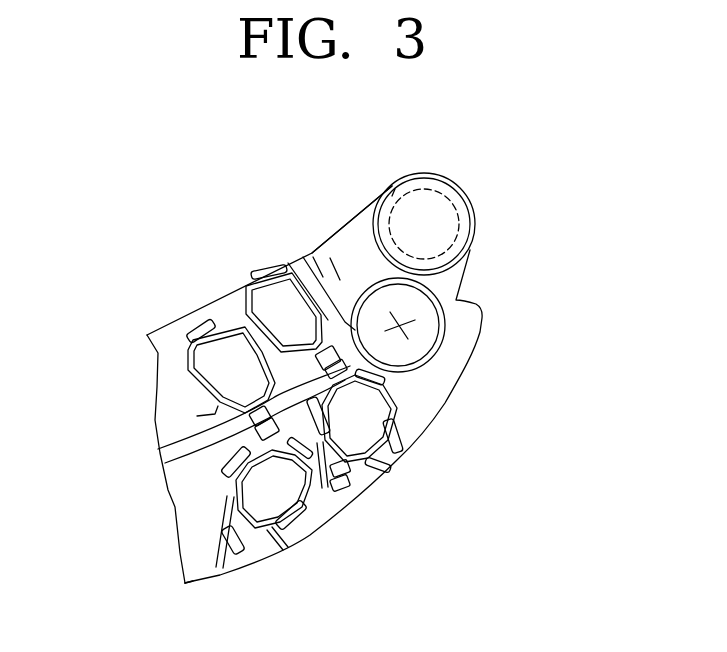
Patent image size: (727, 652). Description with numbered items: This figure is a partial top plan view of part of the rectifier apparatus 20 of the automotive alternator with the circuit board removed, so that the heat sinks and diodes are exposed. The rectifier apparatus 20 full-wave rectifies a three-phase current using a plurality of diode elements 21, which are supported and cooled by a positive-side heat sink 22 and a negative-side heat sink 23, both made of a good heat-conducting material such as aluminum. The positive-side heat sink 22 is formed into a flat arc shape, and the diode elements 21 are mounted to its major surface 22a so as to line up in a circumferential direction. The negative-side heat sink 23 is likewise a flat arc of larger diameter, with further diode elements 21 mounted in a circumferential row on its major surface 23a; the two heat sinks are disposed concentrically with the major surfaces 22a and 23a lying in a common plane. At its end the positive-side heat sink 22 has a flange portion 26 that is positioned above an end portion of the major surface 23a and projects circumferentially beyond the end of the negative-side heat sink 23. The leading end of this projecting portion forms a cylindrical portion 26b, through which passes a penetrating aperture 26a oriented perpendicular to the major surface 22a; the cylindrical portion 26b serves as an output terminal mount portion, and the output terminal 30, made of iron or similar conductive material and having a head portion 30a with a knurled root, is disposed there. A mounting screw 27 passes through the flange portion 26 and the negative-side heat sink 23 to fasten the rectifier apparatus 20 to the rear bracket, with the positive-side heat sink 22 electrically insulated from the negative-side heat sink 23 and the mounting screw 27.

The rectifier apparatus 20 is at (143, 186).
The diode element 21 is at (258, 300).
The positive-side heat sink 22 is at (177, 321).
The major surface 22a is at (168, 358).
The negative-side heat sink 23 is at (422, 437).
The major surface 23a is at (192, 545).
The flange portion 26 is at (326, 243).
The penetrating aperture 26a is at (390, 186).
The cylindrical portion 26b is at (418, 174).
The mounting screw 27 is at (422, 338).
The output terminal 30 is at (448, 230).
The head portion 30a is at (448, 206).